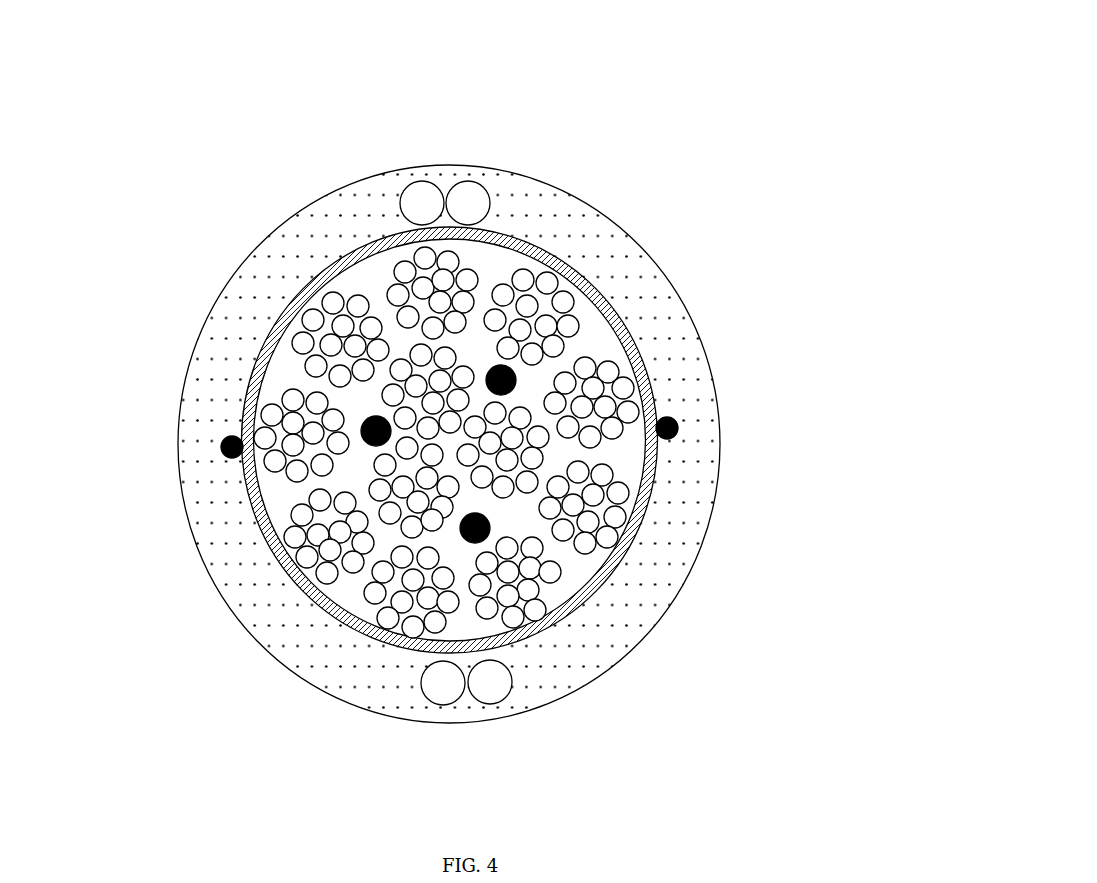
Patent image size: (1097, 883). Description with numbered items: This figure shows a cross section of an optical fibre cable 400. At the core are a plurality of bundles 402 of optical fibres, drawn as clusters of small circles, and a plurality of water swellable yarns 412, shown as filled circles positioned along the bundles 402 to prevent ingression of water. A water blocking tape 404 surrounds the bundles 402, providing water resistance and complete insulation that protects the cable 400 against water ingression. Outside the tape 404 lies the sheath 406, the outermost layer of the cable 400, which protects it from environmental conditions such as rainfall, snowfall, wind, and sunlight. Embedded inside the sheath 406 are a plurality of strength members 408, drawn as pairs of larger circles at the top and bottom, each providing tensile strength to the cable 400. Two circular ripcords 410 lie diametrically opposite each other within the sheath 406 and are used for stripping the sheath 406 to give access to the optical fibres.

The optical fibre cable 400 is at (367, 372).
The plurality of bundles 402 is at (603, 305).
The water blocking tape 404 is at (622, 568).
The sheath 406 is at (257, 295).
The plurality of strength members 408 is at (508, 700).
The plurality of ripcords 410 is at (230, 448).
The plurality of water swellable yarns 412 is at (516, 380).